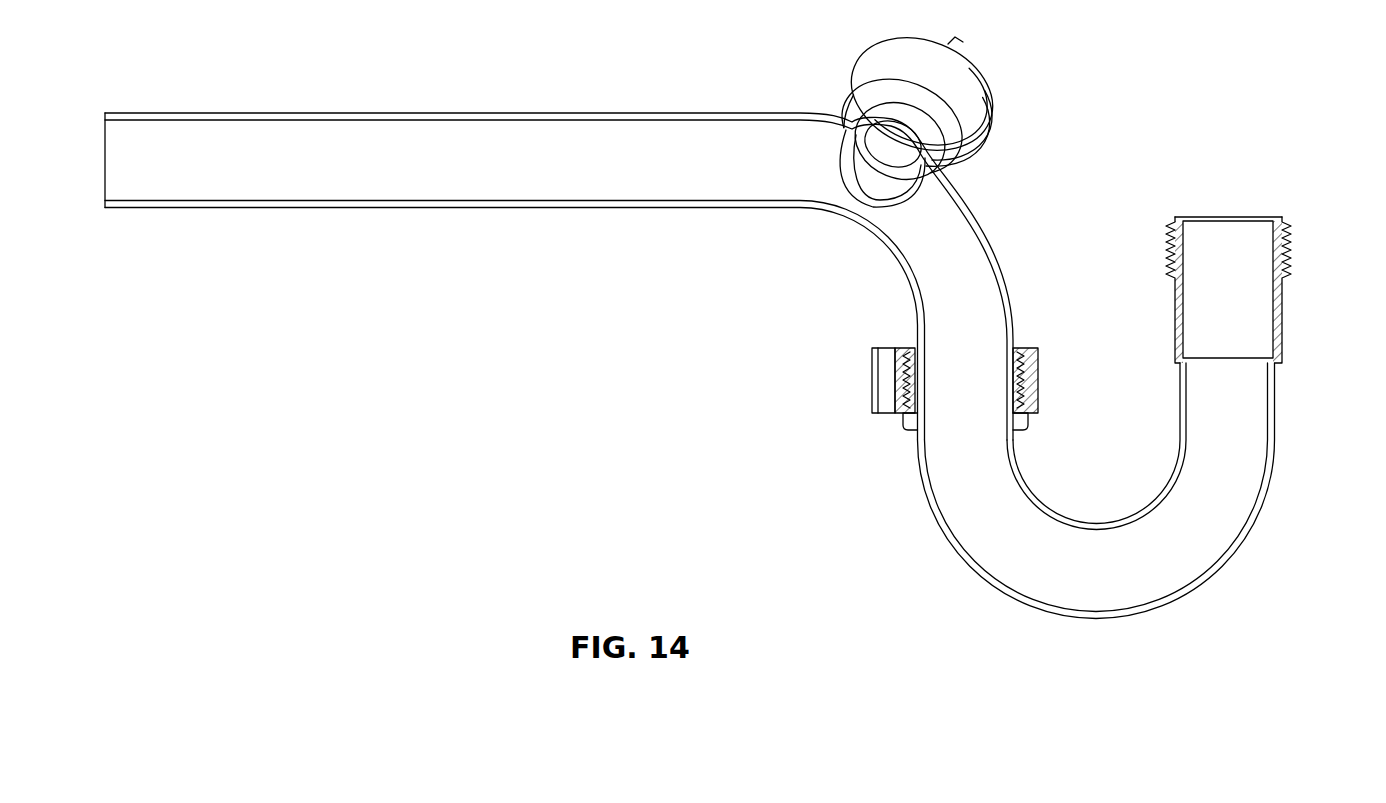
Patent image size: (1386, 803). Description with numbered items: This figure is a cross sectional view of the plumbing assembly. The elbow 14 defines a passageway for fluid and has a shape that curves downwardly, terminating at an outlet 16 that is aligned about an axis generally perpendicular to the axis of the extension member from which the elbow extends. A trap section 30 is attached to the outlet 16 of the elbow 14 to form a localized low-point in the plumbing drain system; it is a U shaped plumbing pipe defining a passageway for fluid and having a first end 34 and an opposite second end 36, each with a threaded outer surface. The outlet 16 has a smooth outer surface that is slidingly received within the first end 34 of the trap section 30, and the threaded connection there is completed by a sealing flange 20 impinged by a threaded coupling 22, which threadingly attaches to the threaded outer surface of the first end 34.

The elbow 14 is at (967, 208).
The outlet 16 is at (1015, 420).
The sealing flange 20 is at (1018, 352).
The threaded coupling 22 is at (872, 377).
The trap section 30 is at (1275, 428).
The first end 34 is at (904, 425).
The second end 36 is at (1290, 240).